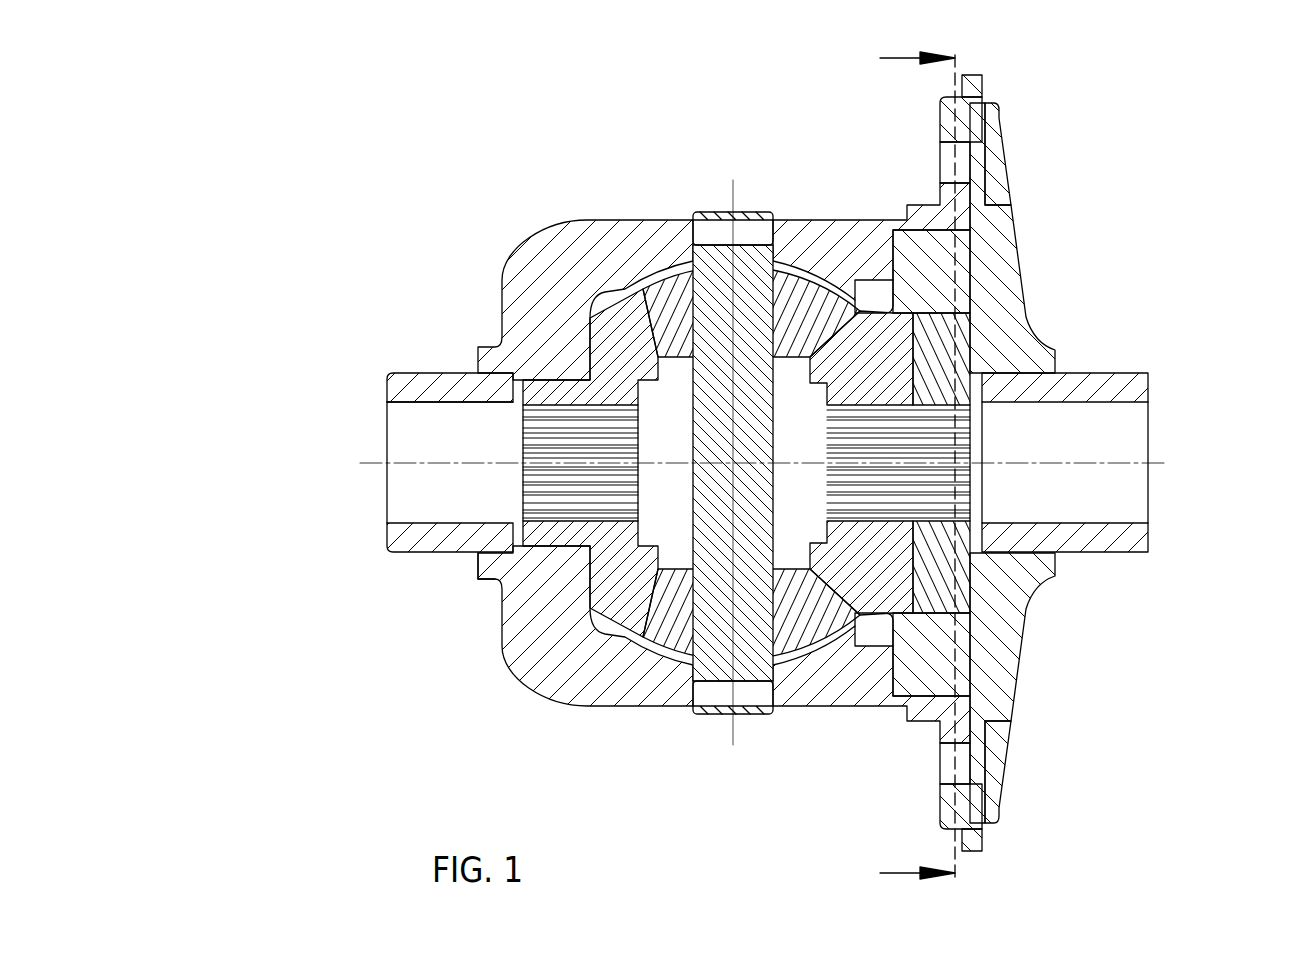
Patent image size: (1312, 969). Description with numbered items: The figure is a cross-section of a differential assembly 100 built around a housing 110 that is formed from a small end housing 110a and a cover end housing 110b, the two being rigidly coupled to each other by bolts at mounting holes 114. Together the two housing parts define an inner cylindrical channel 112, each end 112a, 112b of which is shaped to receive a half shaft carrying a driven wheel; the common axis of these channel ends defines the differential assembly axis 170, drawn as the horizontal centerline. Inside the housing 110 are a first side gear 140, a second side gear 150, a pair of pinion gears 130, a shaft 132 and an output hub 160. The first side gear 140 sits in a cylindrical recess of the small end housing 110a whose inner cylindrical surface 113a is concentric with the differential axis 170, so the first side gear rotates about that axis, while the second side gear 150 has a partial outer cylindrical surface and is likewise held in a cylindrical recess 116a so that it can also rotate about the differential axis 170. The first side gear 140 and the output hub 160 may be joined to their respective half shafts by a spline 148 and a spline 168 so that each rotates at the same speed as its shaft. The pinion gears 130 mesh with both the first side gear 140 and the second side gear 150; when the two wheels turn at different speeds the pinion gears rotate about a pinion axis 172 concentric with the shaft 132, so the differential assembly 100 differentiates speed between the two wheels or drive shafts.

The differential assembly 100 is at (545, 162).
The housing 110 is at (592, 706).
The small end housing 110a is at (527, 262).
The cover end housing 110b is at (1002, 247).
The inner cylindrical channel 112 is at (422, 487).
The end of channel 112a is at (417, 433).
The end of channel 112b is at (1107, 495).
The inner cylindrical surface 113a is at (482, 570).
The mounting holes 114 is at (945, 155).
The cylindrical recess 116a is at (990, 195).
The pinion gears 130 is at (799, 290).
The shaft 132 is at (717, 690).
The first side gear 140 is at (607, 567).
The spline 148 is at (557, 423).
The second side gear 150 is at (958, 655).
The output hub 160 is at (960, 567).
The spline 168 is at (922, 418).
The differential assembly axis 170 is at (1108, 463).
The pinion axis 172 is at (732, 195).